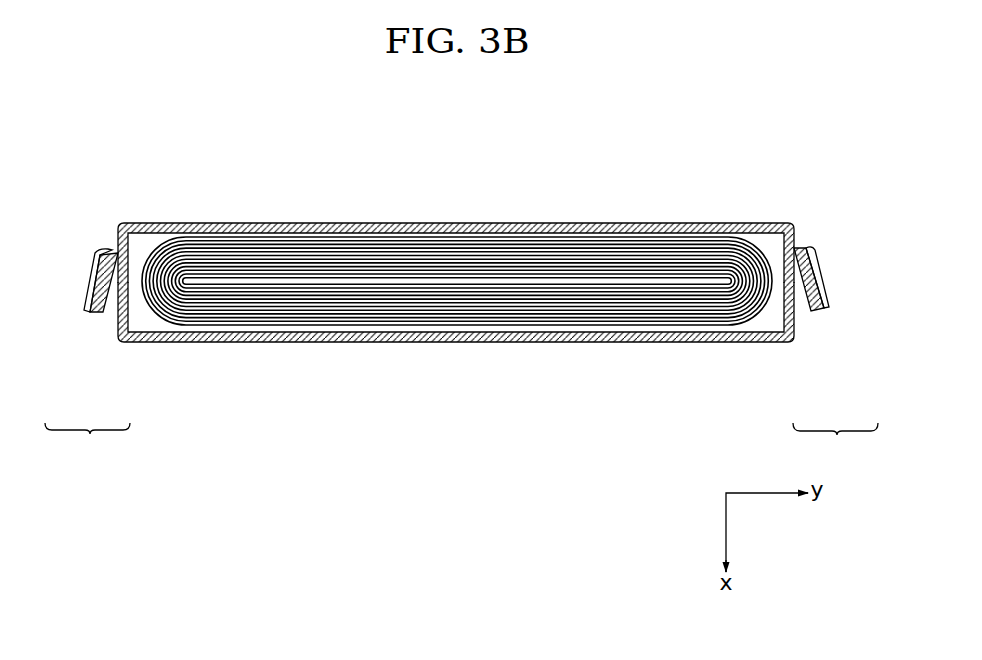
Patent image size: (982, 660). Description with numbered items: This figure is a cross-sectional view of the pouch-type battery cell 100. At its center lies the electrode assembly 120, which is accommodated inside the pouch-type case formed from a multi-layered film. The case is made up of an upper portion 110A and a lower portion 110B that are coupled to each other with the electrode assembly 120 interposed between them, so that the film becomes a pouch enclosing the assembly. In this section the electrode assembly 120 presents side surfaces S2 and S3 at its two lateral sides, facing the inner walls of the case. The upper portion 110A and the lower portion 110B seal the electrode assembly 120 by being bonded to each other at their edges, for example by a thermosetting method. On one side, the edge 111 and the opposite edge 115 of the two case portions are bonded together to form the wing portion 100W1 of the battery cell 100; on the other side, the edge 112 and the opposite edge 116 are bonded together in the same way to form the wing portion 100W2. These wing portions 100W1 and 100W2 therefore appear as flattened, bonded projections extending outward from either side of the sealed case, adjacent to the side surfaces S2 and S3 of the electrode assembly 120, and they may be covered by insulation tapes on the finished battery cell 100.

The battery cell 100 is at (746, 167).
The upper portion 110A is at (451, 221).
The lower portion 110B is at (443, 346).
The electrode assembly 120 is at (143, 251).
The edge 111 is at (86, 309).
The edge 112 is at (823, 309).
The edge 115 is at (95, 313).
The edge 116 is at (813, 311).
The side surface S2 is at (118, 320).
The side surface S3 is at (795, 328).
The wing portion 100W1 is at (87, 444).
The wing portion 100W2 is at (835, 442).